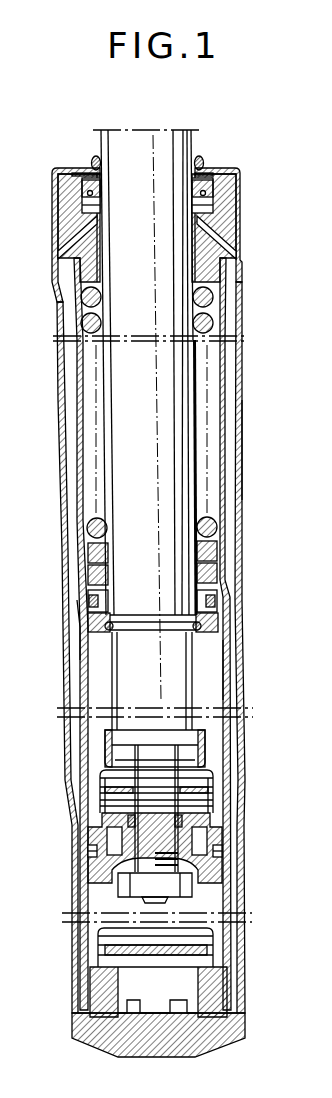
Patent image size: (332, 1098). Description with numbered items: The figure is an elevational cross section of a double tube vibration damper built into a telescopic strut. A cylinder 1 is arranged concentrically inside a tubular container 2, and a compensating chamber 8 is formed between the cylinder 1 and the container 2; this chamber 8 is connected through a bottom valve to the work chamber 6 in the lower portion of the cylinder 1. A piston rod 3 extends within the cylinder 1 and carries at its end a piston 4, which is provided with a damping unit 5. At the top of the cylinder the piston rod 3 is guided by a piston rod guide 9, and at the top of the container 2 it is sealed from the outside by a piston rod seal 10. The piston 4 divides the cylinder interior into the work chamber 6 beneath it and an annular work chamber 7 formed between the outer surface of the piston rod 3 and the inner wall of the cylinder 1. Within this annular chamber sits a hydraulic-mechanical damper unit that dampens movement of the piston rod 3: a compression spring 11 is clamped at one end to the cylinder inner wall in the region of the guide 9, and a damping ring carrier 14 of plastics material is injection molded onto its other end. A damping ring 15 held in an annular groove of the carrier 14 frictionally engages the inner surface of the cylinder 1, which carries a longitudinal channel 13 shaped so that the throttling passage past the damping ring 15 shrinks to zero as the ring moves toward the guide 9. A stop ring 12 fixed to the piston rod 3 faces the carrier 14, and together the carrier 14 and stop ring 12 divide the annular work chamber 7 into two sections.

The cylinder 1 is at (225, 428).
The tubular container 2 is at (243, 300).
The piston rod 3 is at (196, 137).
The piston 4 is at (220, 842).
The damping unit 5 is at (202, 778).
The work chamber 6 is at (215, 897).
The annular work chamber 7 is at (213, 688).
The compensating chamber 8 is at (232, 460).
The piston rod guide 9 is at (235, 257).
The piston rod seal 10 is at (237, 183).
The compression spring 11 is at (210, 520).
The stop ring 12 is at (210, 632).
The longitudinal channel 13 is at (80, 627).
The damping ring carrier 14 is at (217, 578).
The damping ring 15 is at (220, 598).